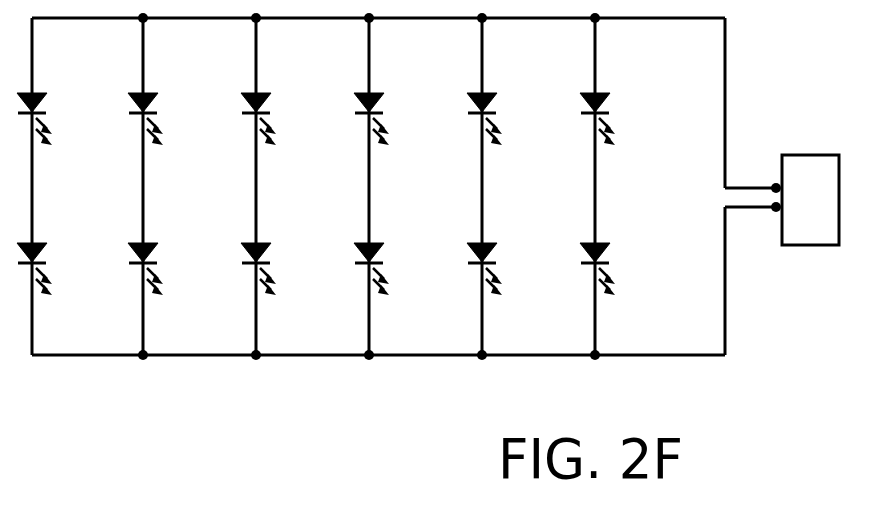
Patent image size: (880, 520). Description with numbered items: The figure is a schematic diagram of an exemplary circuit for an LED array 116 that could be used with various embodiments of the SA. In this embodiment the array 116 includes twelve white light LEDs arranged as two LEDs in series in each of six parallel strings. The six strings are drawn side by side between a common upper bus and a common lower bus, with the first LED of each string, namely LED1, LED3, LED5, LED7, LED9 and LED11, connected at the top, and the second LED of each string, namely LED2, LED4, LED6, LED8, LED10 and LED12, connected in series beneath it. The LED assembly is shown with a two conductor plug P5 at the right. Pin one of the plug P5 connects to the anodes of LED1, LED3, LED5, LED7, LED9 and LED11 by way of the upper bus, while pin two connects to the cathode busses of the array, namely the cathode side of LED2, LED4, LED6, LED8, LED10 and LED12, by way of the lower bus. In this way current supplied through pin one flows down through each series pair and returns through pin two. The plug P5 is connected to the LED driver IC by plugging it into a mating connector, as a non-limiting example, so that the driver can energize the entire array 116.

The LED array 116 is at (122, 397).
The white light LED LED1 is at (55, 100).
The white light LED LED2 is at (59, 249).
The white light LED LED3 is at (168, 100).
The white light LED LED4 is at (170, 249).
The white light LED LED5 is at (280, 100).
The white light LED LED6 is at (281, 249).
The white light LED LED7 is at (393, 100).
The white light LED LED8 is at (393, 249).
The white light LED LED9 is at (507, 100).
The white light LED LED10 is at (512, 249).
The white light LED LED11 is at (626, 100).
The white light LED LED12 is at (626, 248).
The two conductor plug P5 is at (805, 182).